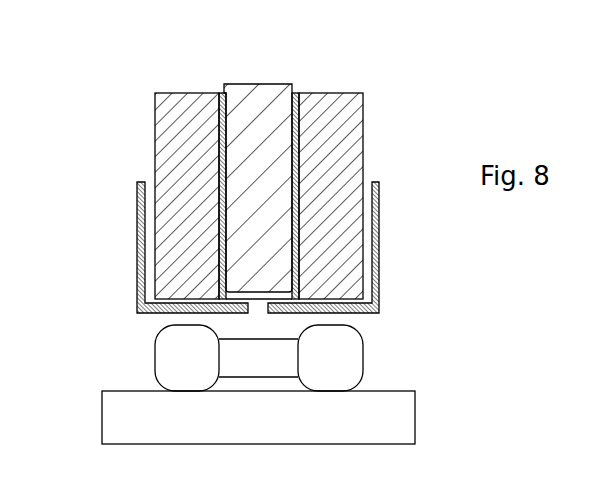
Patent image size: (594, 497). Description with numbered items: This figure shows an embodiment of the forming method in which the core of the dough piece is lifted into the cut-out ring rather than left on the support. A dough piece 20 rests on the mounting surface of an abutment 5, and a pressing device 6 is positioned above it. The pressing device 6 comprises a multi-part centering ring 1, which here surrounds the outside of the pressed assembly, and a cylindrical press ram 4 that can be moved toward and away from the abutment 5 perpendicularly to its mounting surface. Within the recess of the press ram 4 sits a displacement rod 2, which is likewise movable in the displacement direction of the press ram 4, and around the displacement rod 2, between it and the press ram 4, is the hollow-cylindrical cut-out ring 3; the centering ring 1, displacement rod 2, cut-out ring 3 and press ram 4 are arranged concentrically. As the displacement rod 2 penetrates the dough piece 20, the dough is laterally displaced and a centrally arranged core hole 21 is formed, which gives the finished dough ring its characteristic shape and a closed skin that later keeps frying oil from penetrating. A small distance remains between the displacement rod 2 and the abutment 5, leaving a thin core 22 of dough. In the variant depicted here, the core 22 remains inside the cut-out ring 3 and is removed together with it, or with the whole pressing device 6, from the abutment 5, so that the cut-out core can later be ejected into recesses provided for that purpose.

The centering ring 1 is at (138, 225).
The displacement rod 2 is at (340, 103).
The cut-out ring 3 is at (222, 99).
The press ram 4 is at (181, 152).
The abutment 5 is at (392, 421).
The pressing device 6 is at (395, 160).
The dough piece 20 is at (335, 352).
The core hole 21 is at (258, 357).
The core 22 is at (257, 296).